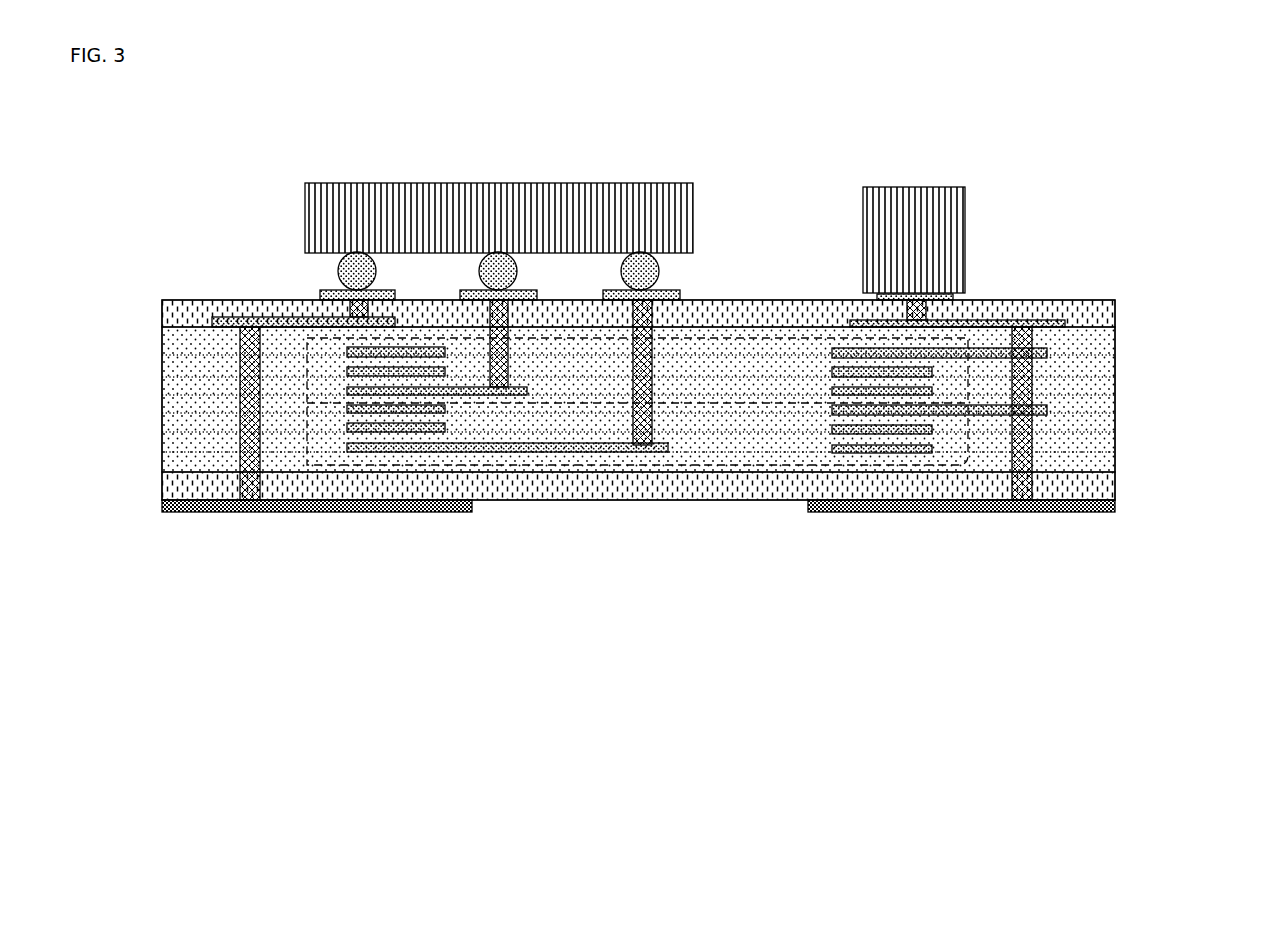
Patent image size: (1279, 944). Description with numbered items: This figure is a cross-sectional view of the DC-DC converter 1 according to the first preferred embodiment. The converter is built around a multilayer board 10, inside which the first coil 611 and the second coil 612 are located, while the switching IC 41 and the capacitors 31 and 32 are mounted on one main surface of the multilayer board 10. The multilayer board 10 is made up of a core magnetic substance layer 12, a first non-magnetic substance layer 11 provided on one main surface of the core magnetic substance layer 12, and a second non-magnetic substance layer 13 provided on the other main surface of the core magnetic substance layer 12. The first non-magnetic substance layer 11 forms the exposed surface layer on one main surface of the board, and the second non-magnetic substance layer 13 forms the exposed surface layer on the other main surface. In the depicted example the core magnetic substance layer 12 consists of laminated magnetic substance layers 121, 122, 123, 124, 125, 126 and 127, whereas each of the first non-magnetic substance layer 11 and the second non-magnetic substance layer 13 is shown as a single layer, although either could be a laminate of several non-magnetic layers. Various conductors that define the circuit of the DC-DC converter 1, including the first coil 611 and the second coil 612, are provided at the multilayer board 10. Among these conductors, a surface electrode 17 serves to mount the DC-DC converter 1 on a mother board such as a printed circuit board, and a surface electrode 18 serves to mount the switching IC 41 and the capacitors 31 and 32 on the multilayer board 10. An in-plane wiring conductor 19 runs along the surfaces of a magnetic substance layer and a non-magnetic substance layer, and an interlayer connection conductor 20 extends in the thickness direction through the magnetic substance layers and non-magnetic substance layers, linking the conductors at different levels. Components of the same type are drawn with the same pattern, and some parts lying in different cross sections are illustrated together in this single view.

The DC-DC converter 1 is at (504, 72).
The multilayer board 10 is at (775, 296).
The first non-magnetic substance layer 11 is at (1105, 493).
The core magnetic substance layer 12 is at (1233, 333).
The magnetic substance layer 121 is at (1103, 468).
The magnetic substance layer 122 is at (1103, 448).
The magnetic substance layer 123 is at (1103, 428).
The magnetic substance layer 124 is at (1103, 407).
The magnetic substance layer 125 is at (1103, 388).
The magnetic substance layer 126 is at (1103, 368).
The magnetic substance layer 127 is at (1103, 348).
The second non-magnetic substance layer 13 is at (1105, 320).
The surface electrode 17 is at (928, 513).
The surface electrode 18 is at (955, 297).
The in-plane wiring conductor 19 is at (608, 453).
The interlayer connection conductor 20 is at (650, 432).
The capacitor 31 is at (926, 222).
The capacitor 32 is at (905, 187).
The switching IC 41 is at (660, 183).
The first coil 611 is at (336, 469).
The second coil 612 is at (303, 333).